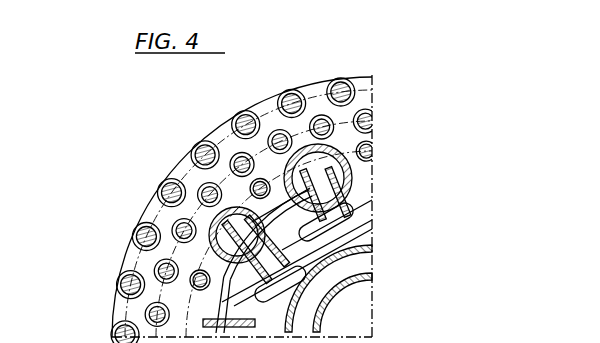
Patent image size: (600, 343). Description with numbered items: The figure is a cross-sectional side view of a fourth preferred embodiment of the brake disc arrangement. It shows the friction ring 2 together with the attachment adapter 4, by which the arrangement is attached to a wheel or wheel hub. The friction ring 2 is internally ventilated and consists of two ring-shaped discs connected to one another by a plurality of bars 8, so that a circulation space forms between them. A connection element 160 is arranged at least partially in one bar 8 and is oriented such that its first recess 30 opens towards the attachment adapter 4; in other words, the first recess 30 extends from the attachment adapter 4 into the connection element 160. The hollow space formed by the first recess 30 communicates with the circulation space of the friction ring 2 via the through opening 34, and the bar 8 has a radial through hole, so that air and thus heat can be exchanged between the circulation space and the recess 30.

The friction ring 2 is at (360, 103).
The attachment adapter 4 is at (367, 240).
The bar 8 is at (244, 212).
The first recess 30 is at (347, 202).
The through opening 34 is at (322, 168).
The connection element 160 is at (330, 187).